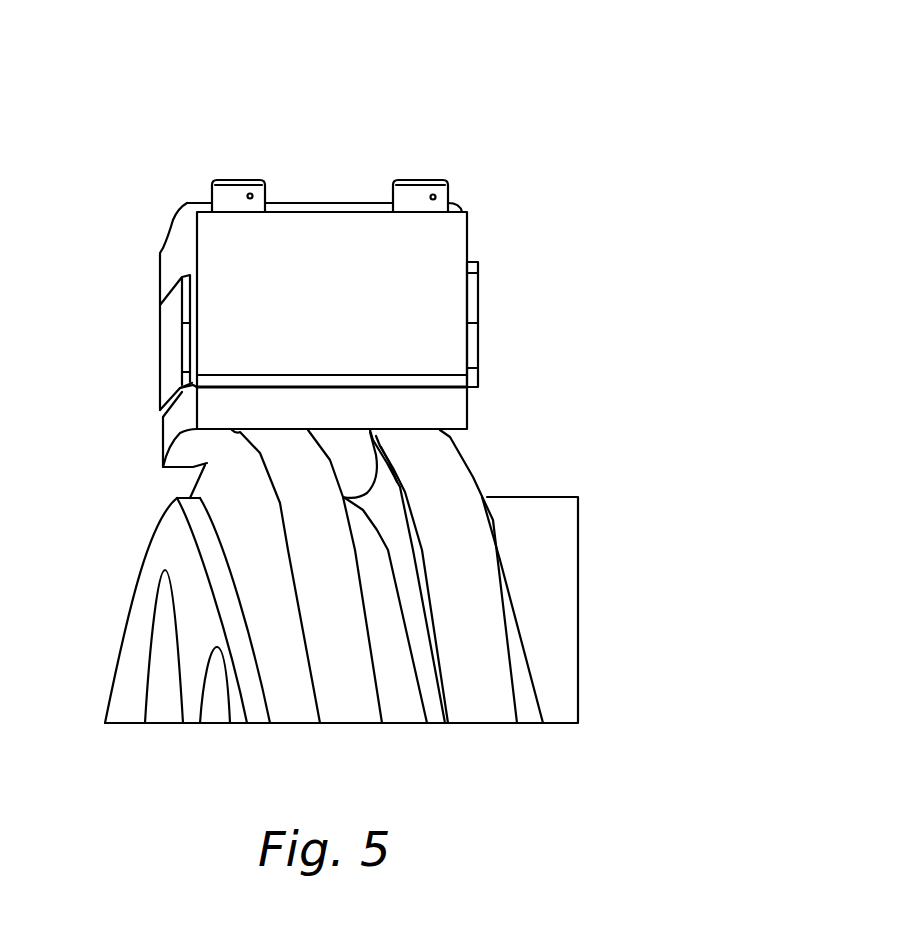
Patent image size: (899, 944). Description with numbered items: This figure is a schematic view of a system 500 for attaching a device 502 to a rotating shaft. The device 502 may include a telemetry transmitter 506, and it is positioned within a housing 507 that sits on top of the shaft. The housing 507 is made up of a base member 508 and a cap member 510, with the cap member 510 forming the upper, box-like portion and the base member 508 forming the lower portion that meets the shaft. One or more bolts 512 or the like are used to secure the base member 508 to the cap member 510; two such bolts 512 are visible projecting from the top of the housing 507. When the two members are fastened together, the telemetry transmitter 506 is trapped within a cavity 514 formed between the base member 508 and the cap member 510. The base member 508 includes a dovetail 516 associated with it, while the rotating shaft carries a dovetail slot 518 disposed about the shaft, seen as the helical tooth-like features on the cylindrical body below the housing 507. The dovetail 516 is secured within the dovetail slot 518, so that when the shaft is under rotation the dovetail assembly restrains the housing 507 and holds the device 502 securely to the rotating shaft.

The system 500 is at (790, 66).
The device 502 is at (474, 290).
The telemetry transmitter 506 is at (477, 325).
The housing 507 is at (331, 181).
The base member 508 is at (163, 446).
The cap member 510 is at (195, 213).
The bolts 512 is at (236, 180).
The cavity 514 is at (153, 298).
The dovetail 516 is at (348, 480).
The dovetail slot 518 is at (390, 492).